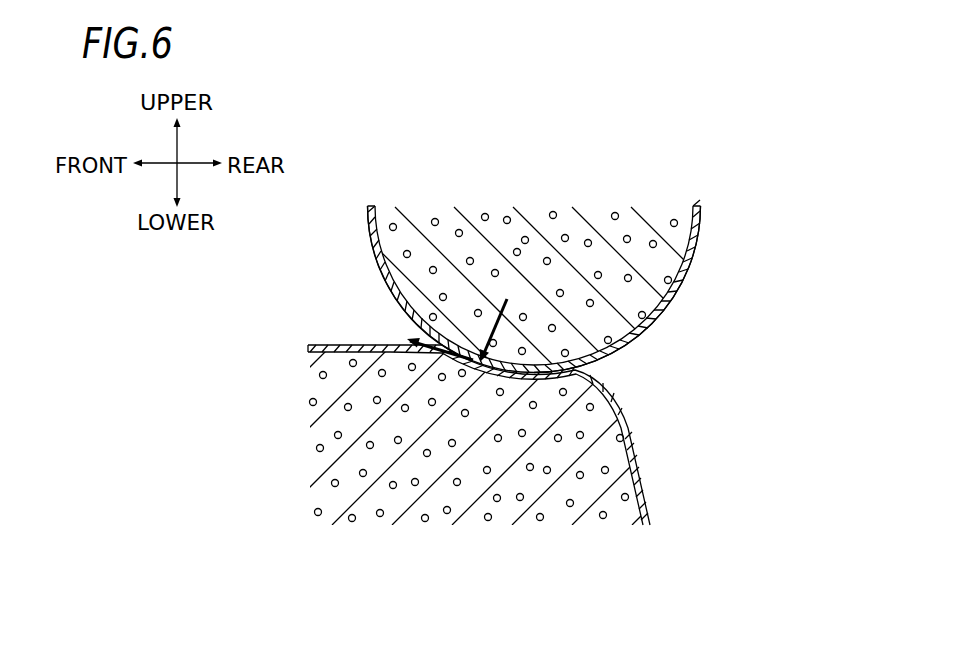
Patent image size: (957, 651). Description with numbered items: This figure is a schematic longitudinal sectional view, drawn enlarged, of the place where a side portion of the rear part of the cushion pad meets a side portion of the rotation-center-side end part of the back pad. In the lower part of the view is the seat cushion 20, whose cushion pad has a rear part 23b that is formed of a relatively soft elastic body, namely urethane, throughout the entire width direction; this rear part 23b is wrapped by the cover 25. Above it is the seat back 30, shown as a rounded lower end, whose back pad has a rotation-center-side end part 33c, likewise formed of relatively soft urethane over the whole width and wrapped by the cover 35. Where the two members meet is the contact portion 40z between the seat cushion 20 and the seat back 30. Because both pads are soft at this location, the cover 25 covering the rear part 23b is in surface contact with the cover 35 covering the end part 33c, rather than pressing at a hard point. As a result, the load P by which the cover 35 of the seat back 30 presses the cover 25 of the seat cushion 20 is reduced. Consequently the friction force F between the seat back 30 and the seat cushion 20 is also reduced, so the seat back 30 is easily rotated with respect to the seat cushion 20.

The seat cushion 20 is at (304, 467).
The rear part of the cushion pad 23b is at (466, 490).
The cover 25 is at (617, 398).
The seat back 30 is at (357, 225).
The rotation-center-side end part of the back pad 33c is at (575, 252).
The cover 35 is at (624, 341).
The contact portion 40z is at (375, 313).
The friction force F is at (434, 341).
The load P is at (499, 319).